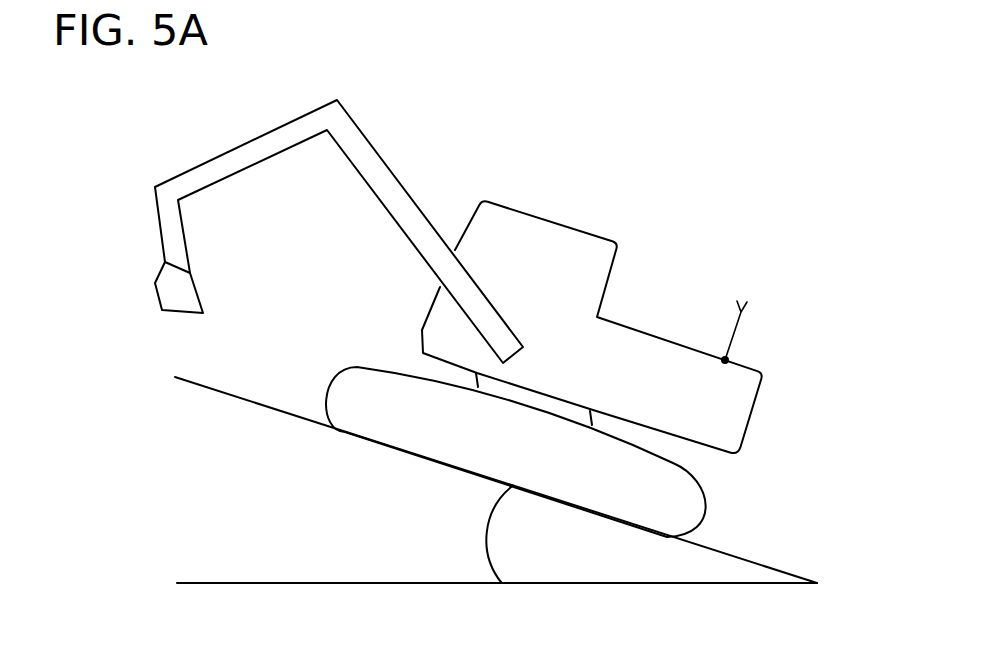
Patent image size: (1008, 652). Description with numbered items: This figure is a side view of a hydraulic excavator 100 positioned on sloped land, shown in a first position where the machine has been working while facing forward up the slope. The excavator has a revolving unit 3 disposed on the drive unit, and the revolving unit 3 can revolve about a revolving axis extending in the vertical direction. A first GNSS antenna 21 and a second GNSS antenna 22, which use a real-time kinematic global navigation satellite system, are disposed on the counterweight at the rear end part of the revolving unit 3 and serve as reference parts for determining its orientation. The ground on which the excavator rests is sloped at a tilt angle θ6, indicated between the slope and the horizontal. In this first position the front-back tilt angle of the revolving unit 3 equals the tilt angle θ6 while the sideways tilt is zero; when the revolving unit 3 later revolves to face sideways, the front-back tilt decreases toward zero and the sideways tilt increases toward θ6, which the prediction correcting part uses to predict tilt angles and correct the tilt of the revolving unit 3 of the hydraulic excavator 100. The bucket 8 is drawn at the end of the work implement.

The hydraulic excavator 100 is at (502, 318).
The bucket 8 is at (197, 282).
The revolving unit 3 is at (745, 442).
The first GNSS antenna 21 is at (785, 332).
The second GNSS antenna 22 is at (737, 322).
The tilt angle θ 6 is at (485, 540).